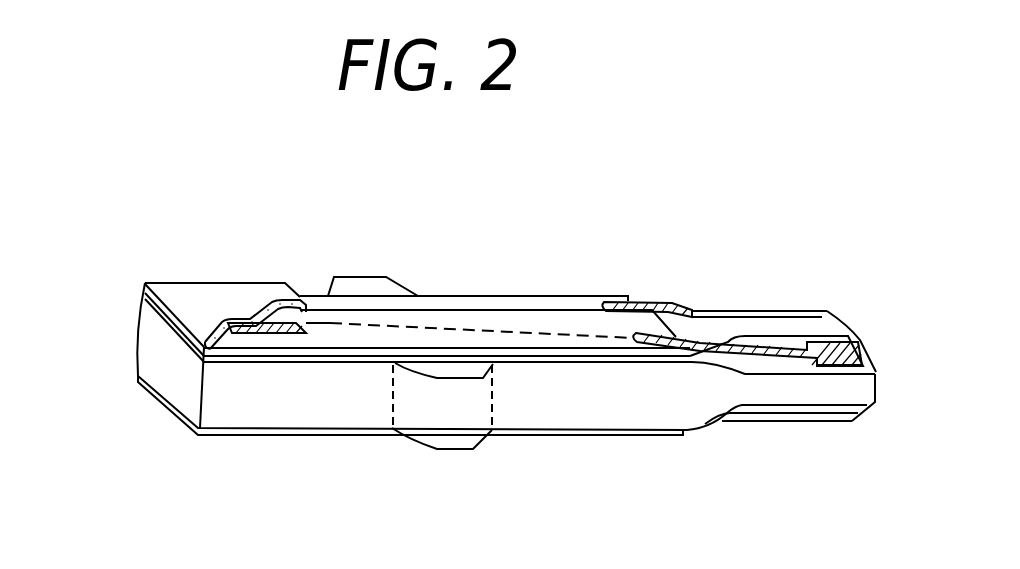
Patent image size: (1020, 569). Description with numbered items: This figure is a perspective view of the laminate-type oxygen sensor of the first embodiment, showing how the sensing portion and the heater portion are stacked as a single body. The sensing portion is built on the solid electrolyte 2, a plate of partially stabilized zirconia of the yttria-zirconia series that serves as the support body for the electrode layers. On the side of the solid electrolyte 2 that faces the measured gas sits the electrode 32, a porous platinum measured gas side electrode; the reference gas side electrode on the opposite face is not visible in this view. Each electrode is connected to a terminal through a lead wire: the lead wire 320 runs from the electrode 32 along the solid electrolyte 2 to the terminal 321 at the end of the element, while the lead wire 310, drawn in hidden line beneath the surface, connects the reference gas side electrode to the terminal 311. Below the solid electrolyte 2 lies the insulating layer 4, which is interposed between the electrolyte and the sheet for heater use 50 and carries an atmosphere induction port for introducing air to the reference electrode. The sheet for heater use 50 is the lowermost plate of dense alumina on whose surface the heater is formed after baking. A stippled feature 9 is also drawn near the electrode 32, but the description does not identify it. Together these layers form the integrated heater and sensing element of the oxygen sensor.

The solid electrolyte 2 is at (365, 303).
The insulating layer 4 is at (153, 355).
The solder 9 is at (240, 318).
The electrode 32 is at (270, 312).
The sheet for heater use 50 is at (240, 437).
The lead wire 310 is at (362, 328).
The terminal 311 is at (650, 337).
The lead wire 320 is at (485, 310).
The terminal 321 is at (615, 305).